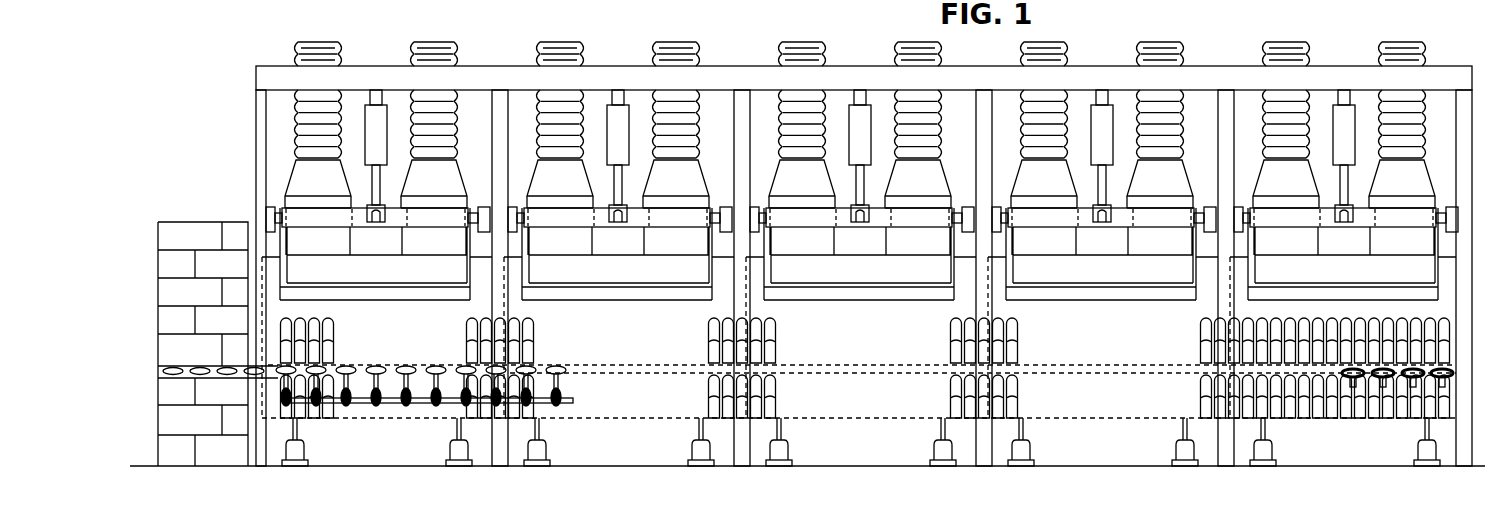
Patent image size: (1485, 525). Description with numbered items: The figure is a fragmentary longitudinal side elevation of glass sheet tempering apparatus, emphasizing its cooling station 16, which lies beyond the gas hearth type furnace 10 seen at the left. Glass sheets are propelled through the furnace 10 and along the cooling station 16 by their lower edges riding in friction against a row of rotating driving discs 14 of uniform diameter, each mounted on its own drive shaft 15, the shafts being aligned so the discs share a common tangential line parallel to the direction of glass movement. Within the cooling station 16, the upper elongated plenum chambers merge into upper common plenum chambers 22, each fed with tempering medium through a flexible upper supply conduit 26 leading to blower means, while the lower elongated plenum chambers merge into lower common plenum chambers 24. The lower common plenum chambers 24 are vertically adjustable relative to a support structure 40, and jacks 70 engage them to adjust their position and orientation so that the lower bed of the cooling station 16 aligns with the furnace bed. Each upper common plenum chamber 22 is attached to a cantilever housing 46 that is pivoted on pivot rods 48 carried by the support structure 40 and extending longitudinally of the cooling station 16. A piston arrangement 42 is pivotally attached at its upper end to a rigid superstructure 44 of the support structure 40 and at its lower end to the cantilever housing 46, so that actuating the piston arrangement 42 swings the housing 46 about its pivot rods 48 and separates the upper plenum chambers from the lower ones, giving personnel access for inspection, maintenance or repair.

The gas hearth type furnace 10 is at (190, 212).
The rotating driving discs 14 is at (175, 378).
The drive shaft 15 is at (540, 379).
The cooling station 16 is at (858, 44).
The upper common plenum chamber 22 is at (391, 277).
The lower common plenum chamber 24 is at (366, 410).
The flexible upper supply conduit 26 is at (413, 52).
The support structure 40 is at (450, 468).
The piston arrangement 42 is at (388, 128).
The rigid superstructure 44 is at (520, 78).
The cantilever housing 46 is at (396, 207).
The pivot rods 48 is at (478, 210).
The jacks 70 is at (305, 452).